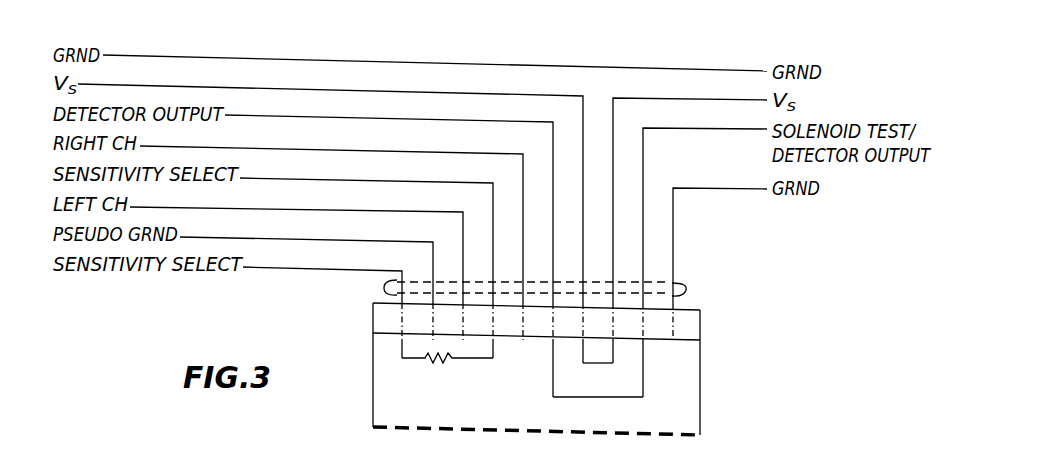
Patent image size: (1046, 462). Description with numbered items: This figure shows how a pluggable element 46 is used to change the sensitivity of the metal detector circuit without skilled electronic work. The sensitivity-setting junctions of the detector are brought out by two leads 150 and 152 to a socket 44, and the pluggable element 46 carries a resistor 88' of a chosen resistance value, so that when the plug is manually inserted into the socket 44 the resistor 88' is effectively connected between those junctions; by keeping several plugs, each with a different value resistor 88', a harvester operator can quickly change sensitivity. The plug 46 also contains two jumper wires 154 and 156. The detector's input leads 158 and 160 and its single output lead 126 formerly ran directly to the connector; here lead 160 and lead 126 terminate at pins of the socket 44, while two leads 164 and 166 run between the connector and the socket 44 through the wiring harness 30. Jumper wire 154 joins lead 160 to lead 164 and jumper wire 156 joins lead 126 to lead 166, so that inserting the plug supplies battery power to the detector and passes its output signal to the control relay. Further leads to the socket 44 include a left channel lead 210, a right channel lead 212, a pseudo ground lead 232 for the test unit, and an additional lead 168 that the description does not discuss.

The input lead 158 is at (296, 58).
The input lead 160 is at (296, 88).
The output lead 126 is at (298, 118).
The right channel lead 212 is at (296, 150).
The lead 150 is at (294, 180).
The left channel lead 210 is at (294, 210).
The pseudo ground lead 232 is at (294, 240).
The lead 152 is at (296, 270).
The lead 164 is at (660, 98).
The lead 166 is at (690, 128).
The ground conductor 168 is at (712, 188).
The jumper wire 154 is at (613, 358).
The jumper wire 156 is at (622, 398).
The resistor 88' is at (447, 375).
The wiring harness 30 is at (688, 283).
The socket 44 is at (700, 316).
The pluggable element 46 is at (700, 375).